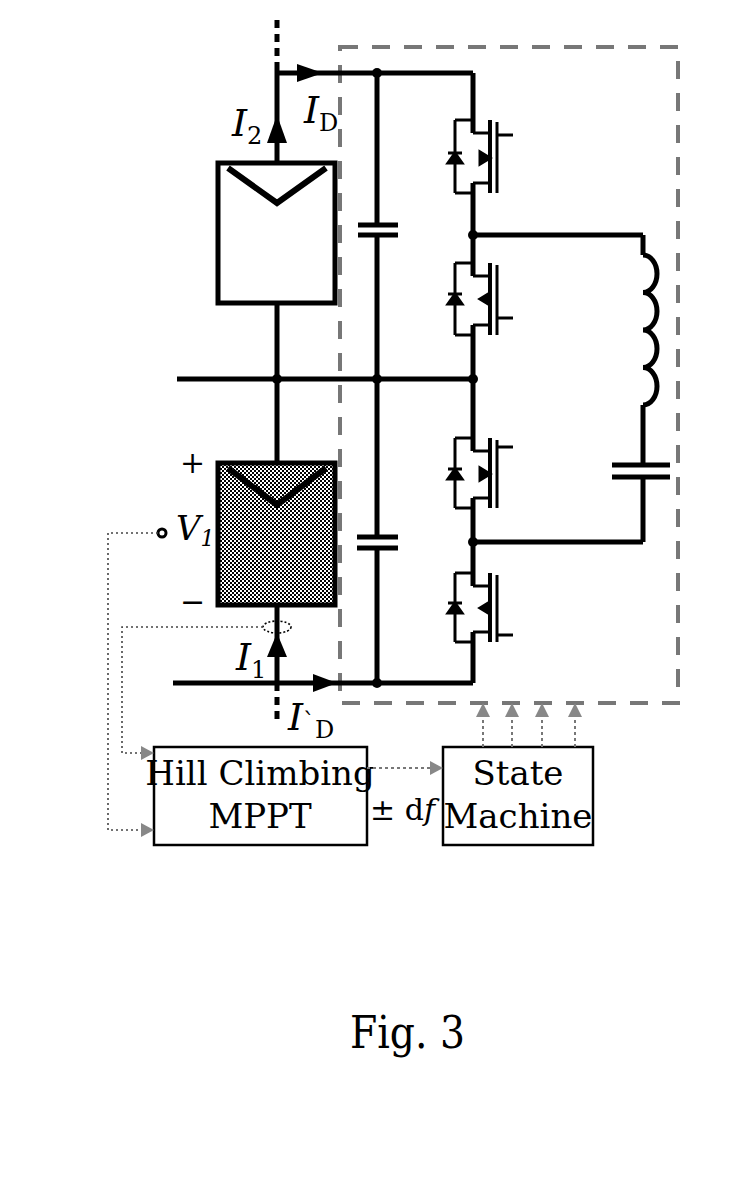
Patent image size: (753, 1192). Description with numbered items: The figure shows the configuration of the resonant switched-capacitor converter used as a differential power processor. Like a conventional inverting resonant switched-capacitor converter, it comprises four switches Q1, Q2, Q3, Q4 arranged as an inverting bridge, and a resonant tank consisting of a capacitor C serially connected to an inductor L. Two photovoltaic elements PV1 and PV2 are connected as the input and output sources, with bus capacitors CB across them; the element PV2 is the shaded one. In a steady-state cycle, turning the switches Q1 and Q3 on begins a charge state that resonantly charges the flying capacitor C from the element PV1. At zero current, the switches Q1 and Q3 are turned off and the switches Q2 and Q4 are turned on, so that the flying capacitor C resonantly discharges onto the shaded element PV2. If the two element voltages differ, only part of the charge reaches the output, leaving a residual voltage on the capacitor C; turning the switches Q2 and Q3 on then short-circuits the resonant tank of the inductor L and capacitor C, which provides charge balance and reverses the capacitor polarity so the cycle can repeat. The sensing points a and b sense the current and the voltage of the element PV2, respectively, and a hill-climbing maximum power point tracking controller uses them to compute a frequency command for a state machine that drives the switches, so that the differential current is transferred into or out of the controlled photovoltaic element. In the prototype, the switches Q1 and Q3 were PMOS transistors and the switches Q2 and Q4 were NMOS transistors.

The sensing point a is at (264, 626).
The sensing point b is at (159, 530).
The switch Q1 is at (503, 157).
The switch Q2 is at (503, 303).
The switch Q3 is at (503, 474).
The switch Q4 is at (503, 607).
The inductor L is at (629, 350).
The capacitor C is at (638, 473).
The bus capacitor CB is at (391, 378).
The PV element PV1 is at (276, 233).
The PV element PV2 is at (276, 534).